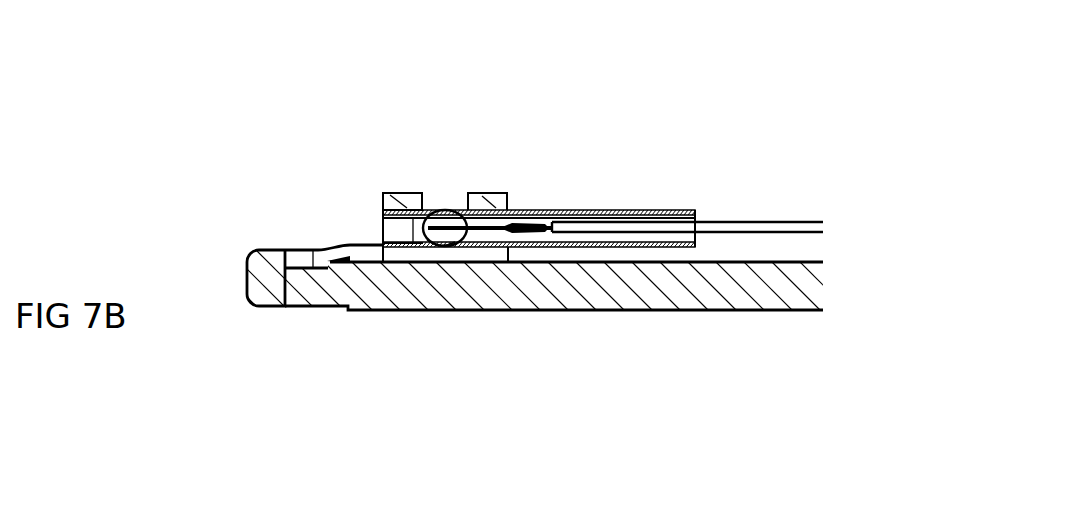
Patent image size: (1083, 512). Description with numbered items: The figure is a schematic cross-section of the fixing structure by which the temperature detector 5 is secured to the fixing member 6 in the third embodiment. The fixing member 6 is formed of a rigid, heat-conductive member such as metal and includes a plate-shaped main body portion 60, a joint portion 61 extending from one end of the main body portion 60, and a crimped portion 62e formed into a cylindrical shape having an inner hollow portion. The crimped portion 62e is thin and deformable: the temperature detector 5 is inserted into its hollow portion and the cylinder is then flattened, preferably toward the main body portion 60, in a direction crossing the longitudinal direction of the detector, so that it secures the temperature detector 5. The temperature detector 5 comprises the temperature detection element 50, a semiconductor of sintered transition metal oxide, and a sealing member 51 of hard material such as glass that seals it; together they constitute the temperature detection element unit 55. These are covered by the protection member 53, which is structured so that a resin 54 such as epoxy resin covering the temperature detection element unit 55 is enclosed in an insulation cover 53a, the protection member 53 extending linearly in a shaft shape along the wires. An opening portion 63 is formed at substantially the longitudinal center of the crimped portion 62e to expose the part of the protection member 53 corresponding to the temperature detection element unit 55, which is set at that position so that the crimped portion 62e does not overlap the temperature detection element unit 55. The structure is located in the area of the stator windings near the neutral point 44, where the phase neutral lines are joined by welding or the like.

The temperature detector 5 is at (603, 142).
The fixing member 6 is at (499, 266).
The neutral point 44 is at (273, 292).
The temperature detection element 50 is at (428, 248).
The sealing member 51 is at (455, 248).
The protection member 53 is at (603, 134).
The insulation cover 53a is at (635, 213).
The resin 54 is at (588, 214).
The temperature detection element unit 55 is at (467, 343).
The main body portion 60 is at (386, 253).
The joint portion 61 is at (298, 263).
The crimped portion 62e is at (392, 197).
The opening portion 63 is at (443, 205).